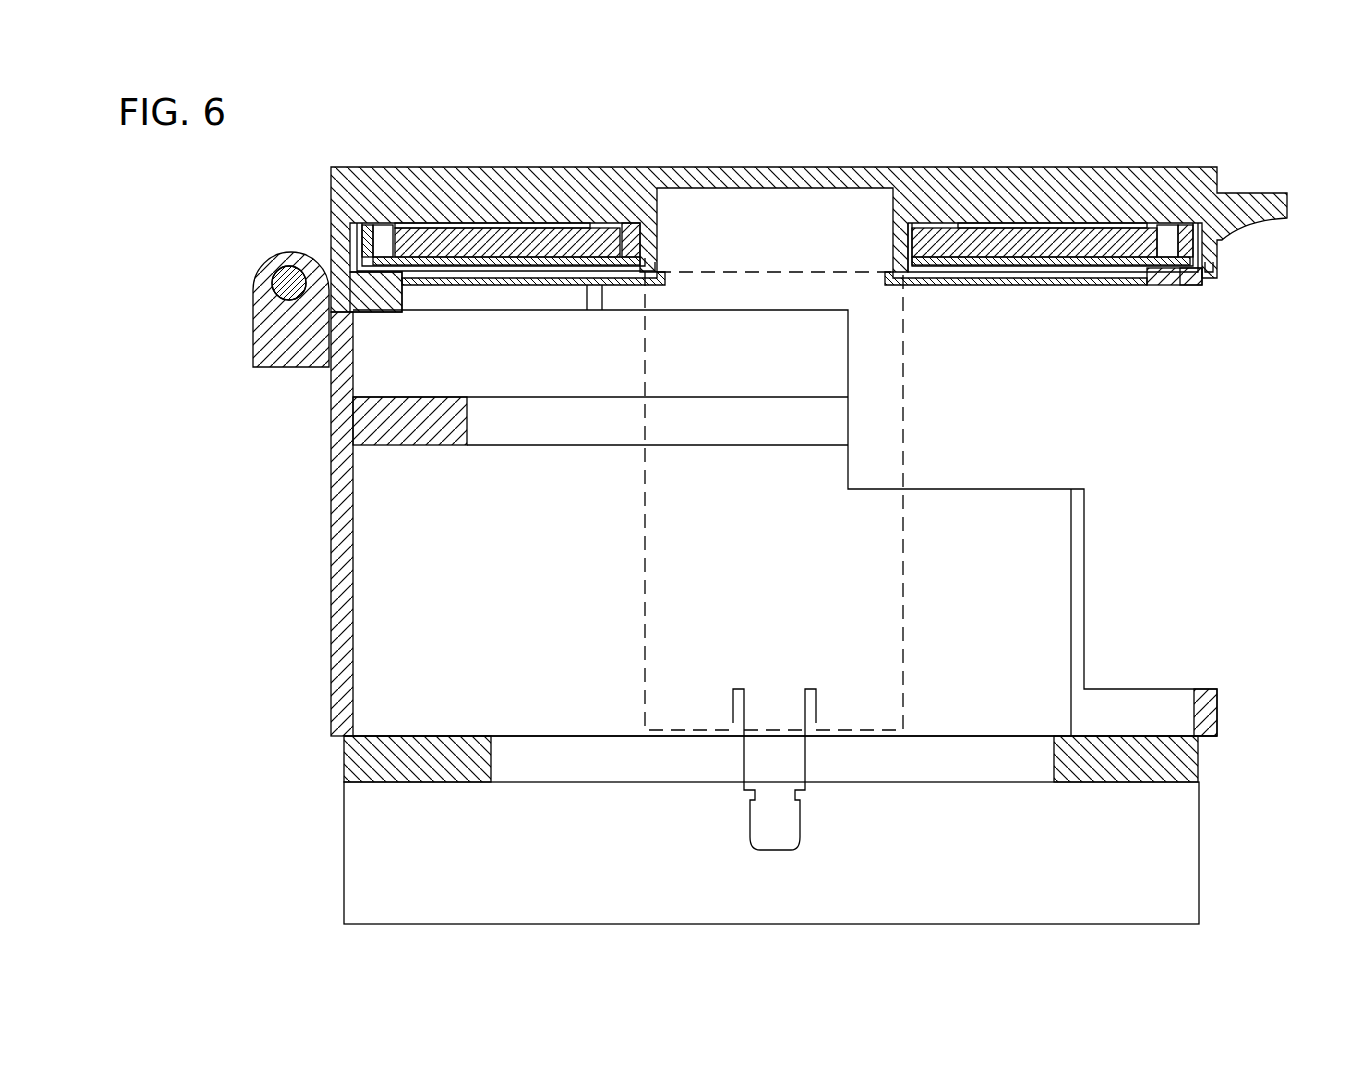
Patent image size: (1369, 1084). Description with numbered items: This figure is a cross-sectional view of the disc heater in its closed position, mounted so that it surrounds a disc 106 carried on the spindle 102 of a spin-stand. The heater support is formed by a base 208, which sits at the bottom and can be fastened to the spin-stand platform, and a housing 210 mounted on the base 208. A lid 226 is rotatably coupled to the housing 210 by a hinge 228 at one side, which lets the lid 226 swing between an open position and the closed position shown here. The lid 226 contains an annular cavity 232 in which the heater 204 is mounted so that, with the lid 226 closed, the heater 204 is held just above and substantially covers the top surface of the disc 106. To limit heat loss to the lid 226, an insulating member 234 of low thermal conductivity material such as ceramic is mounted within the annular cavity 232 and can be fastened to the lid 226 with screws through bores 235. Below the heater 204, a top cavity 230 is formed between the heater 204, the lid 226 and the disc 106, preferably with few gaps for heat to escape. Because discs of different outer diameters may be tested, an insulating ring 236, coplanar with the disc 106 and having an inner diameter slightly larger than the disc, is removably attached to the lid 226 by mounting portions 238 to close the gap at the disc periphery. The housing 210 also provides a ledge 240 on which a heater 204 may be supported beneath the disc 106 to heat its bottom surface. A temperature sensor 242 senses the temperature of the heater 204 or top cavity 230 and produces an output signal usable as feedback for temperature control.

The spindle 102 is at (903, 455).
The disc 106 is at (1060, 285).
The heater 204 is at (377, 260).
The base 208 is at (1199, 830).
The housing 210 is at (330, 562).
The lid 226 is at (1203, 185).
The hinge 228 is at (253, 300).
The top cavity 230 is at (457, 270).
The annular cavity 232 is at (538, 228).
The insulating member 234 is at (1003, 240).
The bores 235 is at (378, 237).
The insulating ring 236 is at (363, 293).
The mounting portions 238 is at (1148, 283).
The ledge 240 is at (412, 397).
The temperature sensor 242 is at (630, 223).